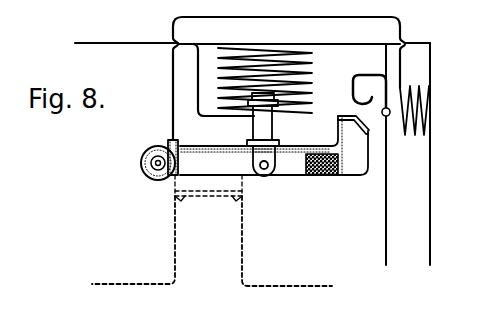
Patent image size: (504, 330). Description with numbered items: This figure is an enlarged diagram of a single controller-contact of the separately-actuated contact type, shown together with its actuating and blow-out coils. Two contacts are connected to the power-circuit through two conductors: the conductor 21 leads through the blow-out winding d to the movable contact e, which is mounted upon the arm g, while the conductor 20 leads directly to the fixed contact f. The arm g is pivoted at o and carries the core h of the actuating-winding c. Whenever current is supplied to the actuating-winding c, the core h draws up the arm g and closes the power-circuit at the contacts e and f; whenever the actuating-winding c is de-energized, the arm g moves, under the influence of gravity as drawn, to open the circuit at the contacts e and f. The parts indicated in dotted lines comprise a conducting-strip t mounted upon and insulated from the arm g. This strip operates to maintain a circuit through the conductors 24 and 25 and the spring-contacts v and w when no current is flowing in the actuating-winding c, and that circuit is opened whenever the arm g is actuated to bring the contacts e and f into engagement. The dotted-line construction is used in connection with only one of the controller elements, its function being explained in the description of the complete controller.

The actuating-winding c is at (265, 71).
The blow-out winding d is at (433, 108).
The movable contact e is at (355, 116).
The fixed contact f is at (354, 78).
The arm g is at (300, 177).
The core h is at (276, 130).
The pivot o is at (152, 169).
The conducting-strip t is at (220, 197).
The spring-contact v is at (177, 198).
The spring-contact w is at (243, 198).
The conductor 20 is at (386, 167).
The conductor 21 is at (434, 167).
The conductor 24 is at (121, 245).
The conductor 25 is at (298, 246).